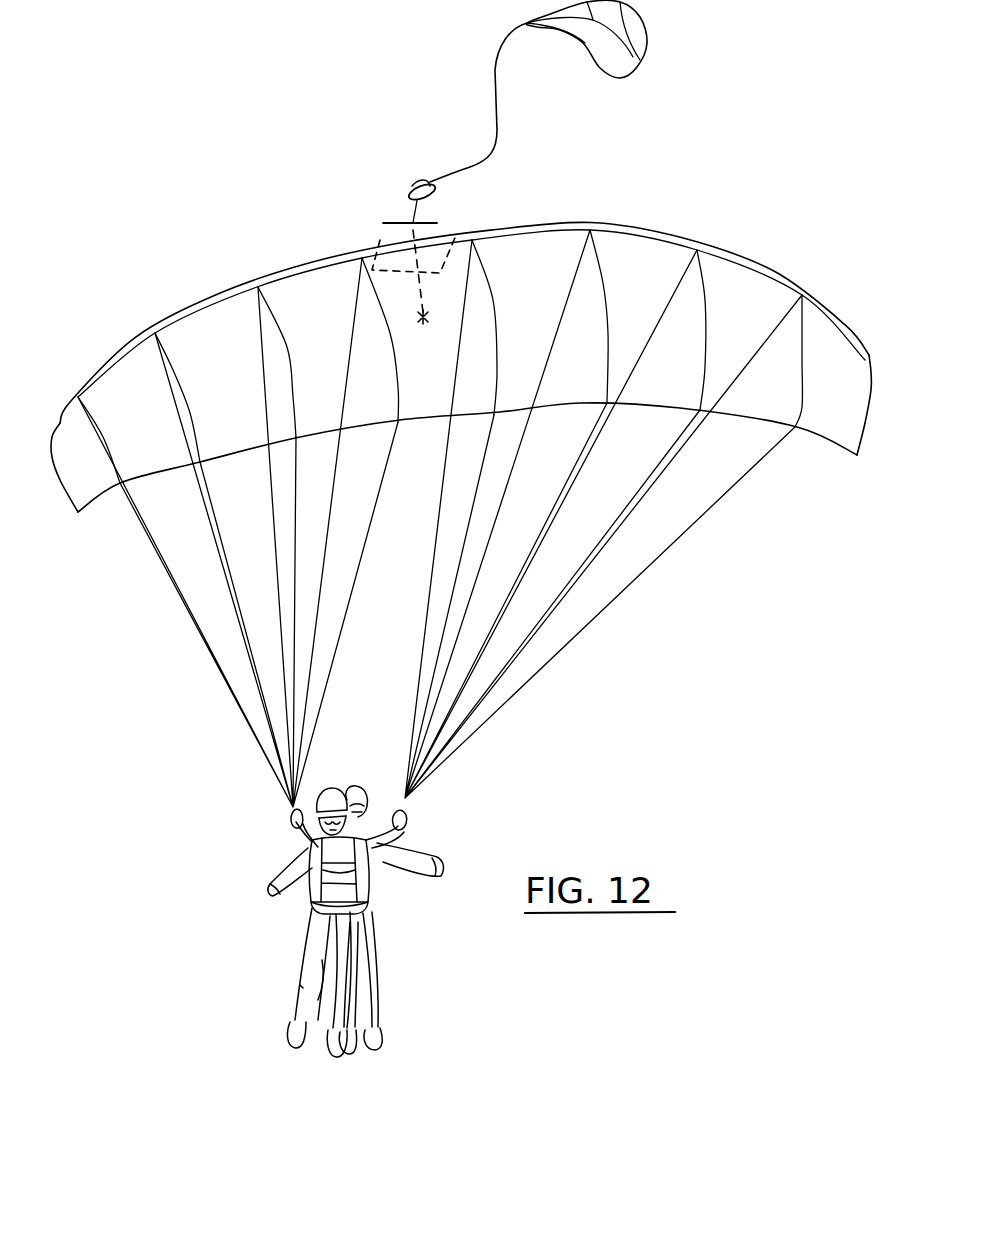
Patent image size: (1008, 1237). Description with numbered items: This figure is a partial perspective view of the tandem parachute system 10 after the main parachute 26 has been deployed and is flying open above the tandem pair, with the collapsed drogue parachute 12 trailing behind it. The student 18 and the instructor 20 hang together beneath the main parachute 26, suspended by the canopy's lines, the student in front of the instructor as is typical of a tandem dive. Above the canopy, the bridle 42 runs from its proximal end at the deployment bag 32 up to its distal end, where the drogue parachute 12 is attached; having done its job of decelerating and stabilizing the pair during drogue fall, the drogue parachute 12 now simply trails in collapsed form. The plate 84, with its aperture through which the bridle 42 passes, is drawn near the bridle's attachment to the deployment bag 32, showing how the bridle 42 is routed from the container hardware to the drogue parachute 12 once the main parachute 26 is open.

The tandem parachute system 10 is at (168, 252).
The drogue parachute 12 is at (633, 33).
The student 18 is at (317, 945).
The instructor 20 is at (360, 810).
The main parachute 26 is at (790, 268).
The deployment bag 32 is at (377, 237).
The bridle 42 is at (500, 117).
The plate 84 is at (437, 193).